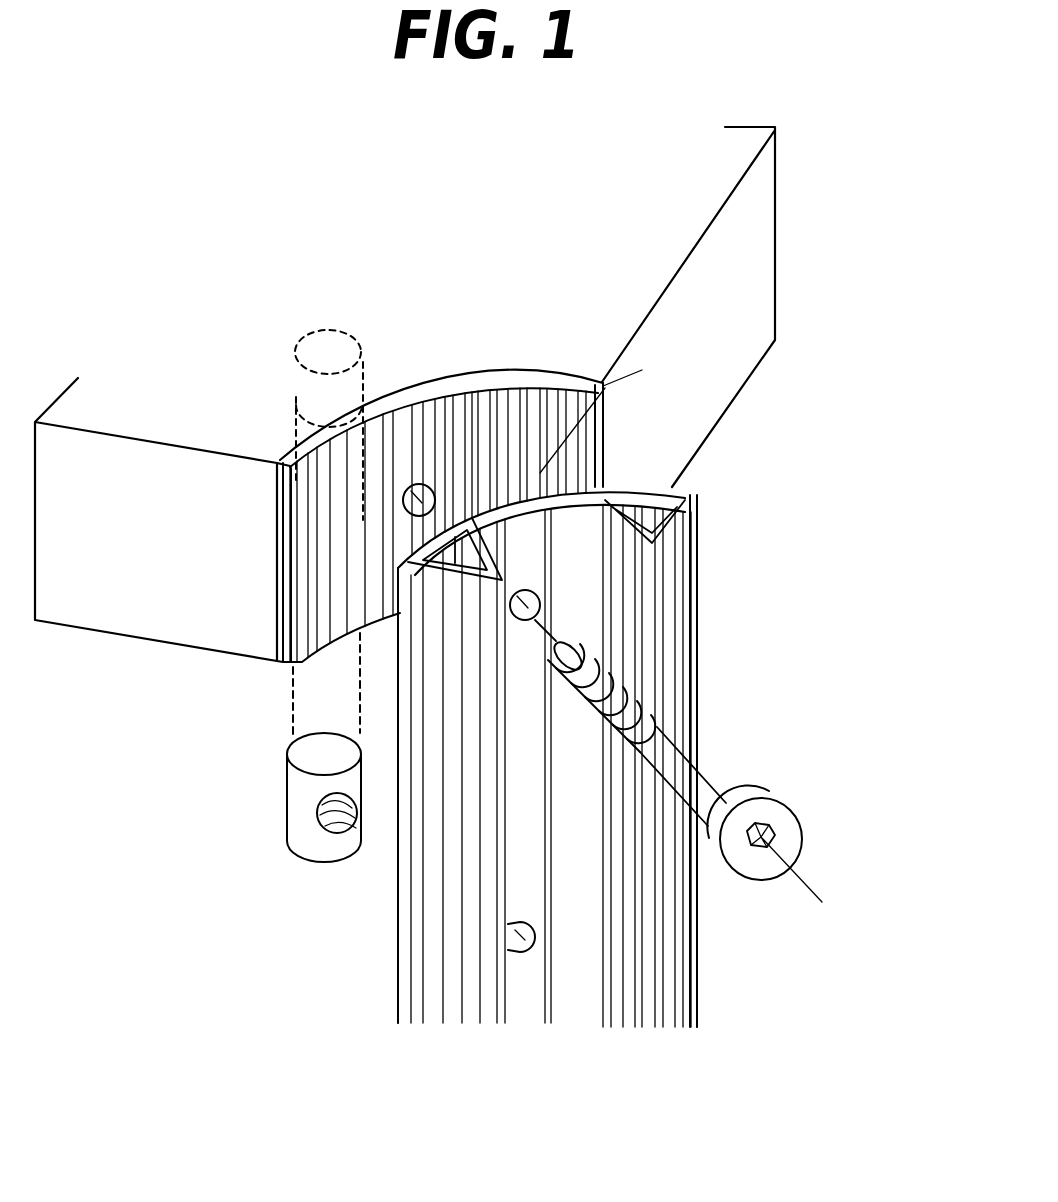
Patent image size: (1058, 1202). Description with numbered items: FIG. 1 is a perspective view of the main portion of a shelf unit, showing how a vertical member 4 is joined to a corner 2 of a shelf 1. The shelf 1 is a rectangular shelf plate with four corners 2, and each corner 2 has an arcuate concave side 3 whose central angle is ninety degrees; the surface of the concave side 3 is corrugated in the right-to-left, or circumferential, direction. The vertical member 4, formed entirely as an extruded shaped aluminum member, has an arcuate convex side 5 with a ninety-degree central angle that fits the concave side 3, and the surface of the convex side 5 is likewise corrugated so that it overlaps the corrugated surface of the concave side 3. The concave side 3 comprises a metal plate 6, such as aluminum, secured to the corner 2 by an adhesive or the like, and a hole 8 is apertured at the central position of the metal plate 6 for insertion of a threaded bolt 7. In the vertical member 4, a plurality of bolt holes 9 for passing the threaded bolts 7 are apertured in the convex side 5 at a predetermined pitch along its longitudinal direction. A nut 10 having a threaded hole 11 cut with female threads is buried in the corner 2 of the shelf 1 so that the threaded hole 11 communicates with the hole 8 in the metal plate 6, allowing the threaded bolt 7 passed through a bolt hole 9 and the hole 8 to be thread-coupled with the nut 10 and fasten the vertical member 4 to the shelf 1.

The shelf 1 is at (155, 596).
The corner 2 is at (396, 332).
The concave side 3 is at (642, 370).
The vertical member 4 is at (697, 672).
The convex side 5 is at (622, 482).
The metal plate 6 is at (503, 372).
The threaded bolt 7 is at (717, 763).
The hole 8 is at (430, 481).
The bolt holes 9 is at (542, 580).
The nut 10 is at (290, 397).
The threaded hole 11 is at (337, 822).